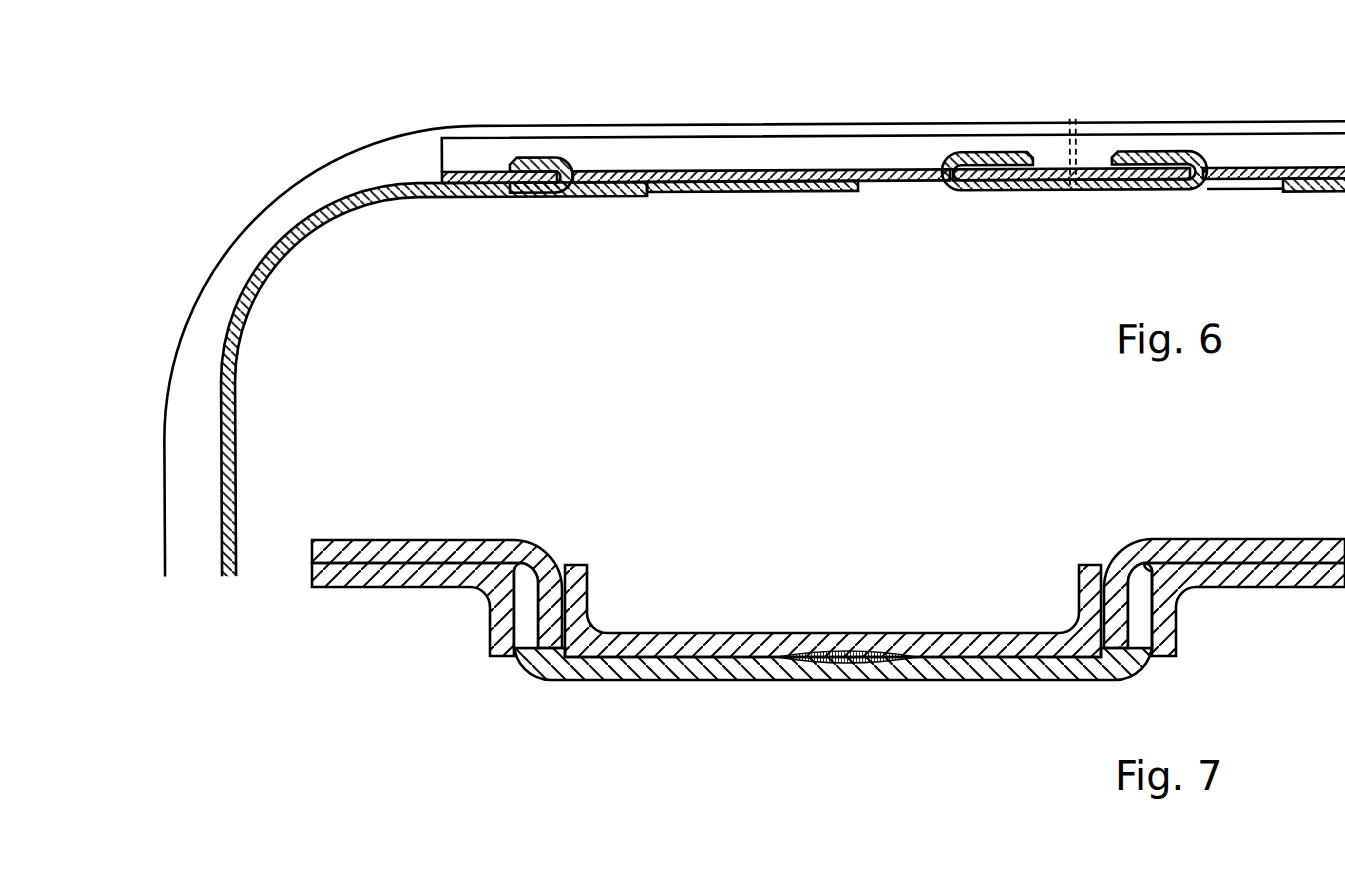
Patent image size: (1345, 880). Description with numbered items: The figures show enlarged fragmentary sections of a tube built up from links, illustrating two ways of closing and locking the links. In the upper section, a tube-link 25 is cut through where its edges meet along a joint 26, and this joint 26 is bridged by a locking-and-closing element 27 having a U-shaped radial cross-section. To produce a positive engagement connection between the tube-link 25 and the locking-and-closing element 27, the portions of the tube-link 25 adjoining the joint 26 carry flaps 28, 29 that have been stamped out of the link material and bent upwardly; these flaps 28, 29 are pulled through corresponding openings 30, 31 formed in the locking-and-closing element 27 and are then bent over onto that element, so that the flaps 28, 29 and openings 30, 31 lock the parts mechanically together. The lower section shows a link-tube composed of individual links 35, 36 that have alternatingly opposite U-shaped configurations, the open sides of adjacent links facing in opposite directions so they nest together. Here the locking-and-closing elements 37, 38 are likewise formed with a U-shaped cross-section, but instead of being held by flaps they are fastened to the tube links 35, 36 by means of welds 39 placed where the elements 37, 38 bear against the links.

In FIG. 6, the tube-link 25 is at (359, 177).
In FIG. 6, the joint 26 is at (1085, 122).
In FIG. 6, the locking-and-closing element 27 is at (806, 148).
In FIG. 6, the flap 28 is at (545, 157).
In FIG. 6, the flap 29 is at (987, 158).
In FIG. 6, the opening 30 is at (590, 172).
In FIG. 6, the opening 31 is at (935, 163).
In FIG. 7, the link 35 is at (450, 543).
In FIG. 7, the link 36 is at (757, 682).
In FIG. 7, the locking-and-closing element 37 is at (678, 633).
In FIG. 7, the locking-and-closing element 38 is at (1282, 578).
In FIG. 7, the weld 39 is at (847, 633).